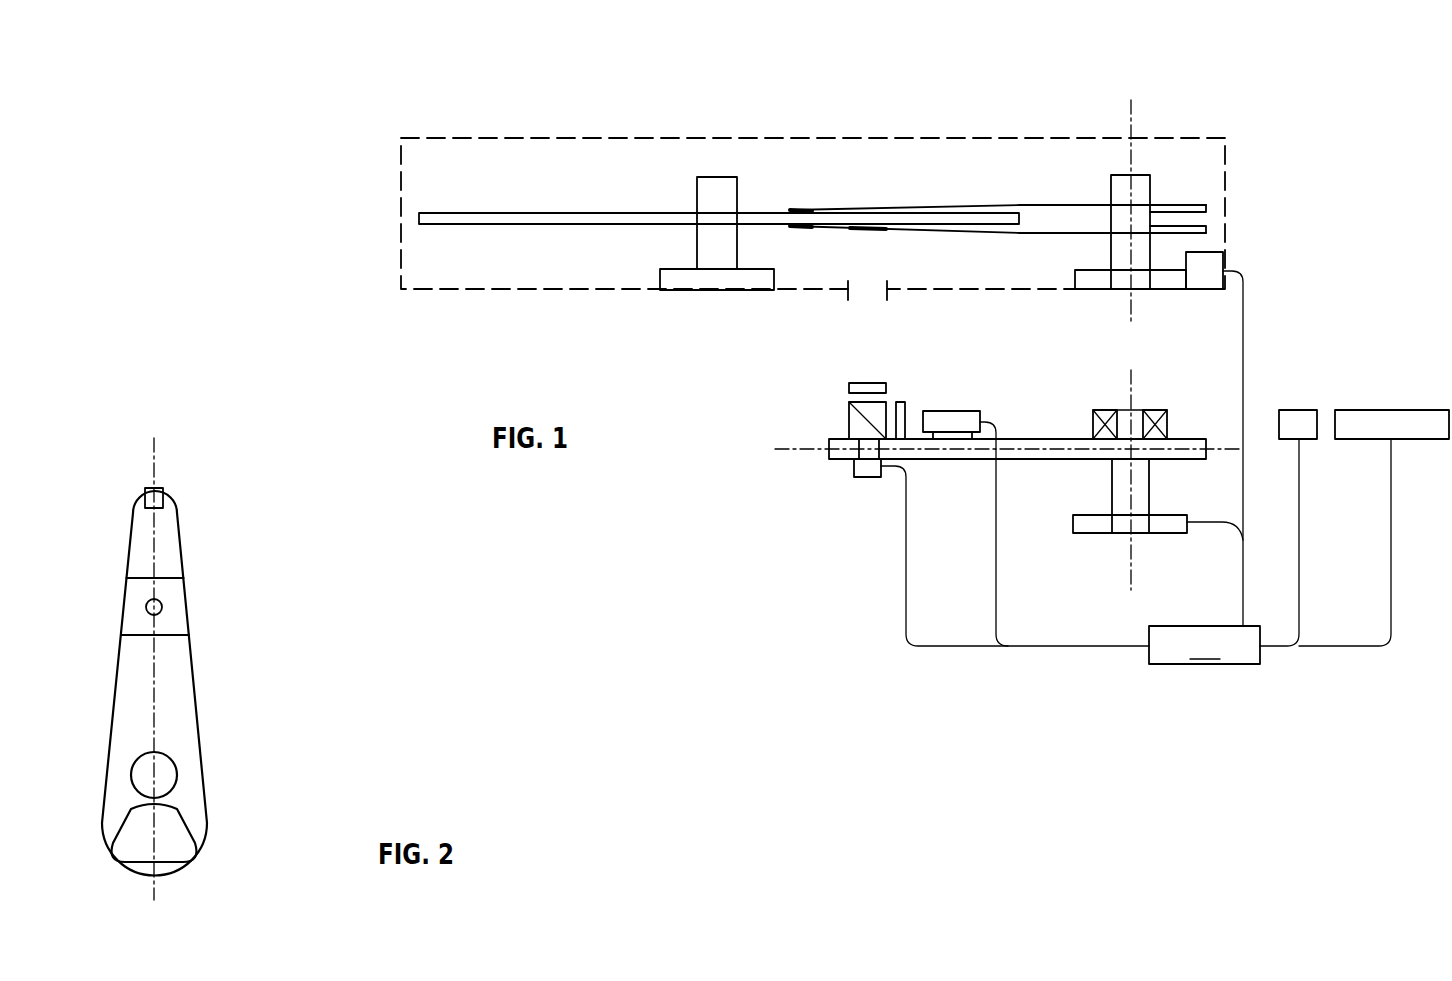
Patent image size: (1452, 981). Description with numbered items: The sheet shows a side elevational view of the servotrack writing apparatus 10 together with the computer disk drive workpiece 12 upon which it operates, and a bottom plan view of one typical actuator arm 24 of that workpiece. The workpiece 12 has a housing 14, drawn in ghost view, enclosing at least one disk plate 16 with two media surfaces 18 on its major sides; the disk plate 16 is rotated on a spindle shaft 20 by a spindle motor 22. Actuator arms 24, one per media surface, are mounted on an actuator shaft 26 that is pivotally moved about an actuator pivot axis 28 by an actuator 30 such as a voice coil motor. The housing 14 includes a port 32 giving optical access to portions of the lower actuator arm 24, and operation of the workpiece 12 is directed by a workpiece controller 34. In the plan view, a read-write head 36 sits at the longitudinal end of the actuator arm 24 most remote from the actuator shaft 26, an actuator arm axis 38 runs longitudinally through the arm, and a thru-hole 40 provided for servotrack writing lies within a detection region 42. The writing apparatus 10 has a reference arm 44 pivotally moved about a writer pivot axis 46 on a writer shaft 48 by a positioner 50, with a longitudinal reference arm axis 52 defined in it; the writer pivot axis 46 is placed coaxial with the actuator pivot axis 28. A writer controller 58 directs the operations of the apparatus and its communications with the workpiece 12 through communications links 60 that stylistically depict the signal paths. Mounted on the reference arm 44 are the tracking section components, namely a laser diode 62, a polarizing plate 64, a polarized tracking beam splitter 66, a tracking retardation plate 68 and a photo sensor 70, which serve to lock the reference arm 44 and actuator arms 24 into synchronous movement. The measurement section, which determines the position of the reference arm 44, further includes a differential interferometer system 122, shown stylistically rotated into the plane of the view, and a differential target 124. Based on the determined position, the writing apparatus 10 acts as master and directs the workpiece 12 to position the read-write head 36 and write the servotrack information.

In FIG. 1, the writing apparatus 10 is at (1300, 326).
In FIG. 1, the workpiece 12 is at (850, 101).
In FIG. 1, the housing 14 is at (510, 137).
In FIG. 1, the disk plate 16 is at (419, 213).
In FIG. 1, the media surfaces 18 is at (512, 210).
In FIG. 1, the spindle shaft 20 is at (717, 193).
In FIG. 1, the spindle motor 22 is at (720, 280).
In FIG. 1, the actuator arm 24 is at (1057, 200).
In FIG. 2, the actuator arm 24 is at (197, 710).
In FIG. 1, the actuator shaft 26 is at (1140, 185).
In FIG. 2, the actuator shaft 26 is at (178, 790).
In FIG. 1, the actuator pivot axis 28 is at (1130, 130).
In FIG. 1, the actuator 30 is at (1092, 282).
In FIG. 1, the port 32 is at (850, 300).
In FIG. 1, the workpiece controller 34 is at (1220, 262).
In FIG. 2, the read-write head 36 is at (165, 493).
In FIG. 2, the actuator arm axis 38 is at (155, 438).
In FIG. 2, the thru-hole 40 is at (163, 607).
In FIG. 2, the detection region 42 is at (180, 585).
In FIG. 1, the reference arm 44 is at (985, 462).
In FIG. 1, the writer pivot axis 46 is at (1140, 382).
In FIG. 1, the writer shaft 48 is at (1122, 477).
In FIG. 1, the positioner 50 is at (1100, 535).
In FIG. 1, the reference arm axis 52 is at (780, 450).
In FIG. 1, the writer controller 58 is at (1204, 645).
In FIG. 1, the communications links 60 is at (1243, 600).
In FIG. 1, the laser diode 62 is at (978, 415).
In FIG. 1, the polarizing plate 64 is at (905, 405).
In FIG. 1, the polarized tracking beam splitter 66 is at (852, 420).
In FIG. 1, the tracking retardation plate 68 is at (885, 390).
In FIG. 1, the photo sensor 70 is at (868, 478).
In FIG. 1, the differential interferometer system 122 is at (1376, 380).
In FIG. 1, the differential target 124 is at (1165, 410).